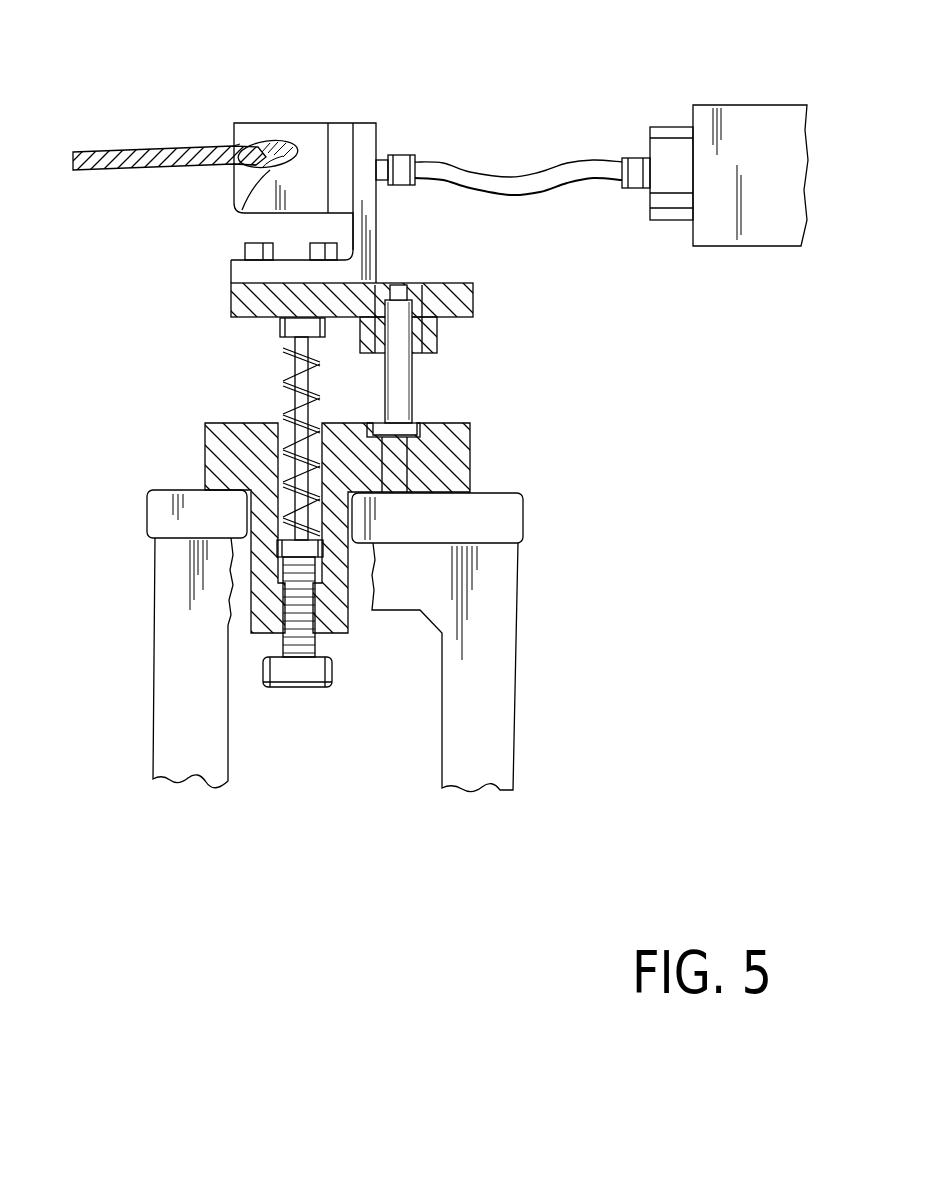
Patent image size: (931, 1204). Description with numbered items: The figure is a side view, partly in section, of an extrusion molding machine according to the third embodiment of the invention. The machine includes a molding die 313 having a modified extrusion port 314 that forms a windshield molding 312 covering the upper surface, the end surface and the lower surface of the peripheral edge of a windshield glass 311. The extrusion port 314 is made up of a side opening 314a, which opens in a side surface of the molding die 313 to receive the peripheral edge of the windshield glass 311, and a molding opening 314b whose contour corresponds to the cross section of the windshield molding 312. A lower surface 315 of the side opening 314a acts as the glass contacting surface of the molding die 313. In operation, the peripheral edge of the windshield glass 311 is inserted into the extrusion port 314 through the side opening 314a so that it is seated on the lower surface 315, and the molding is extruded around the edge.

The windshield glass 311 is at (153, 147).
The windshield molding 312 is at (270, 142).
The molding die 313 is at (315, 128).
The extrusion port 314 is at (290, 152).
The side opening 314a is at (233, 148).
The molding opening 314b is at (237, 207).
The lower surface 315 is at (232, 166).